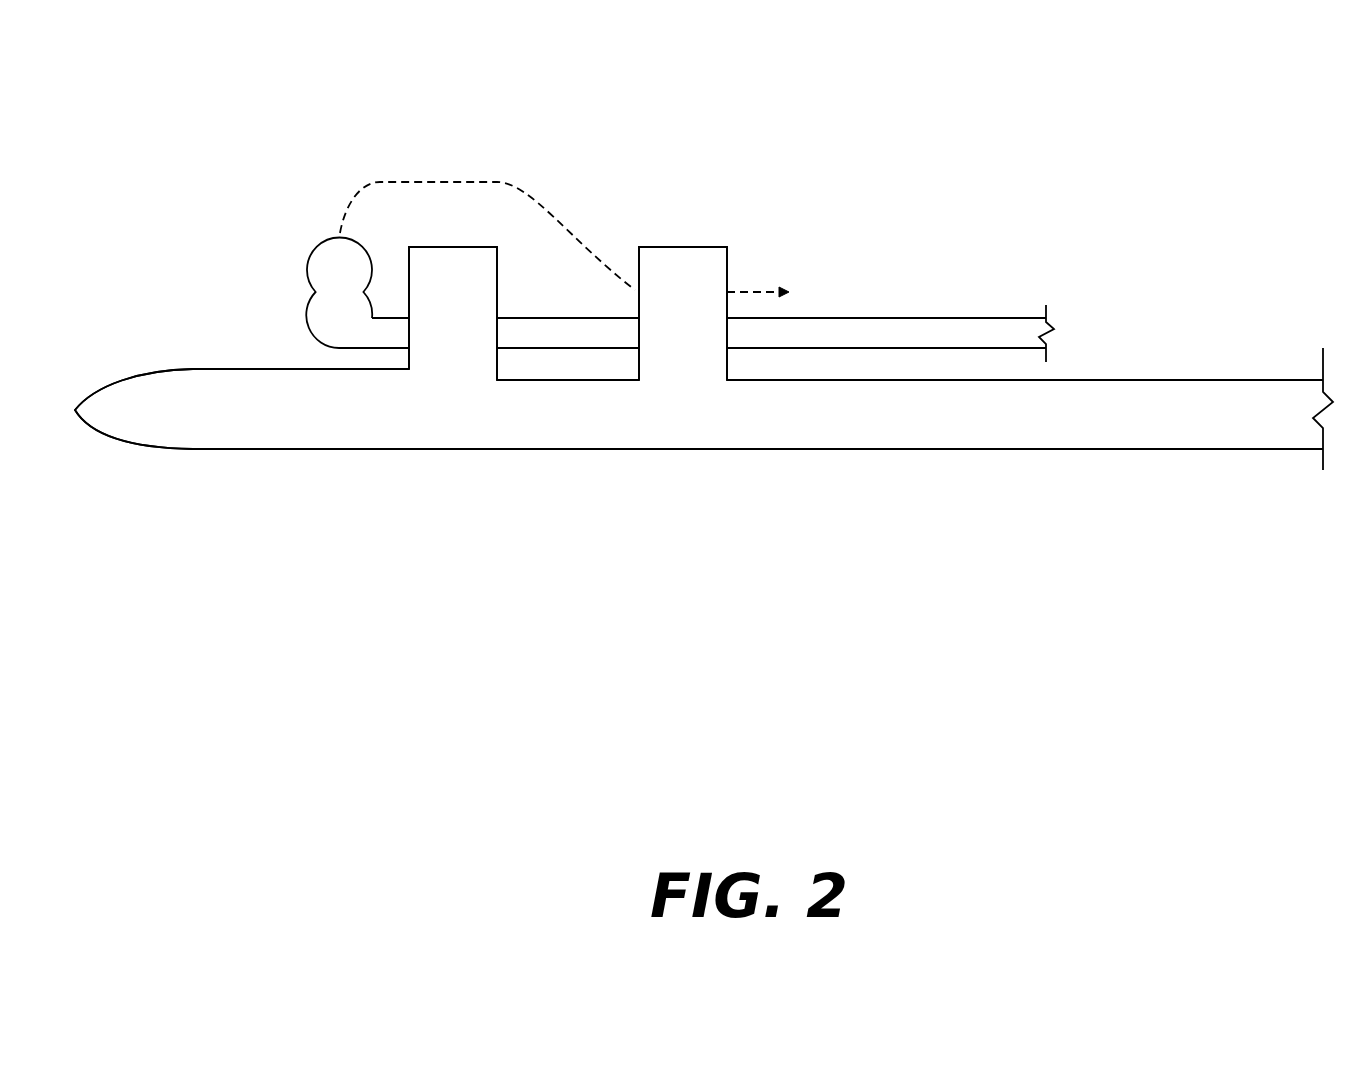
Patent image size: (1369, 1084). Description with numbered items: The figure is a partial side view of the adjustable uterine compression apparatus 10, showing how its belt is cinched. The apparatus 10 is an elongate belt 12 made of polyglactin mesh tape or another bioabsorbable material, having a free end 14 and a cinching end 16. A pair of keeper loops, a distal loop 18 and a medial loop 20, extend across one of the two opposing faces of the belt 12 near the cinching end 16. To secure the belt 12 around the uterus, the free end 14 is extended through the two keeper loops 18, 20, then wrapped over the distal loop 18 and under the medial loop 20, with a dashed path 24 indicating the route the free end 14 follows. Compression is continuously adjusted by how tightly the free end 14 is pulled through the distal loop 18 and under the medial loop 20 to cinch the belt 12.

The adjustable uterine compression apparatus 10 is at (1050, 494).
The elongate belt 12 is at (967, 318).
The free end 14 is at (308, 280).
The cinching end 16 is at (110, 437).
The distal loop 18 is at (457, 333).
The medial loop 20 is at (662, 263).
The flexible tether 24 is at (457, 182).